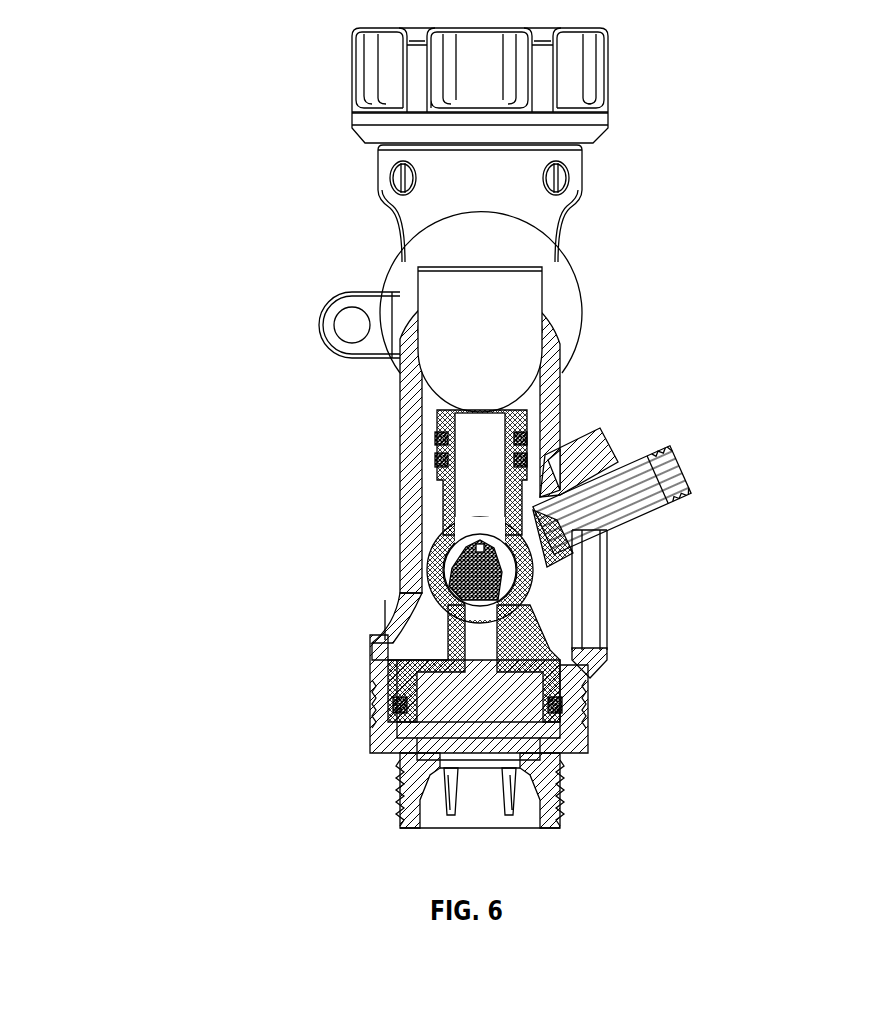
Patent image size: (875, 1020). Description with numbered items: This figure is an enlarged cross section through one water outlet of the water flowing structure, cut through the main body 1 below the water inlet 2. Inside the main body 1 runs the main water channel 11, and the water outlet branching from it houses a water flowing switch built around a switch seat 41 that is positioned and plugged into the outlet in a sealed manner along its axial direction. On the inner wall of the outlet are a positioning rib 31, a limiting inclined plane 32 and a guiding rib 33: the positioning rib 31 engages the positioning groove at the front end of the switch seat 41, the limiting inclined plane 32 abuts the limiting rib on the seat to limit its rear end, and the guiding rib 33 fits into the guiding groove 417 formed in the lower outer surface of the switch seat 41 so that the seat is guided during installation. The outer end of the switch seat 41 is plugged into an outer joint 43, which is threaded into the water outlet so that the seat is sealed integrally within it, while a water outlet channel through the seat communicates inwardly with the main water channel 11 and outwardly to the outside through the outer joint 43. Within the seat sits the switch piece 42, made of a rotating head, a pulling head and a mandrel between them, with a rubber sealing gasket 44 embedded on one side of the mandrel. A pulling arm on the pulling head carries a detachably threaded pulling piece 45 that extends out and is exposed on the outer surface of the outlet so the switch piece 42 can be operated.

The main body 1 is at (433, 440).
The water inlet 2 is at (575, 163).
The main water channel 11 is at (477, 305).
The positioning rib 31 is at (557, 463).
The limiting inclined plane 32 is at (572, 618).
The guiding rib 33 is at (465, 548).
The switch seat 41 is at (590, 705).
The switch piece 42 is at (437, 508).
The outer joint 43 is at (565, 790).
The sealing gasket 44 is at (458, 620).
The pulling piece 45 is at (625, 505).
The guiding groove 417 is at (410, 595).